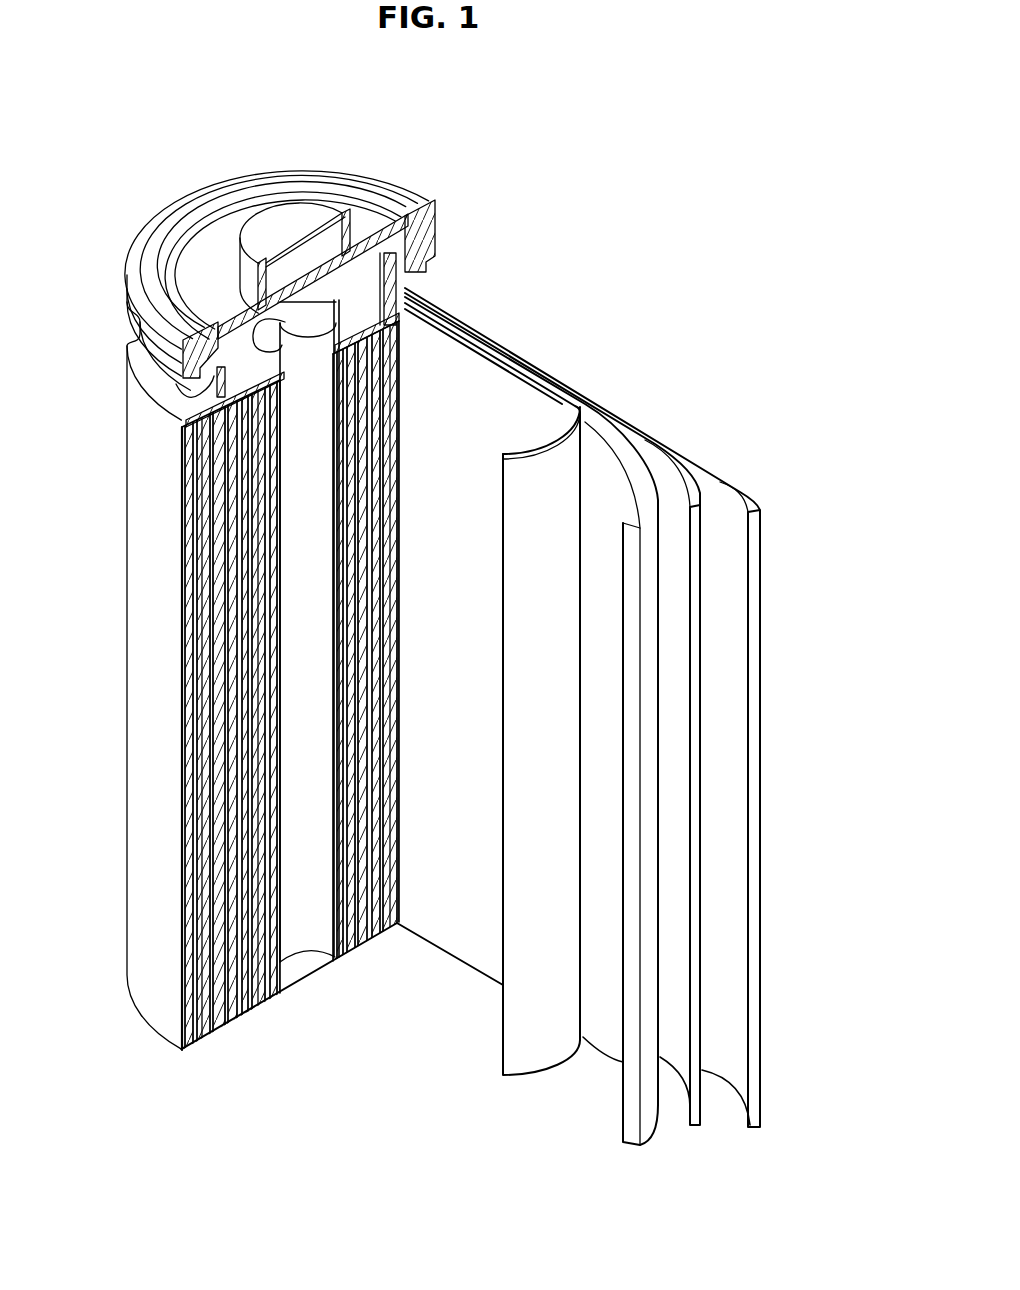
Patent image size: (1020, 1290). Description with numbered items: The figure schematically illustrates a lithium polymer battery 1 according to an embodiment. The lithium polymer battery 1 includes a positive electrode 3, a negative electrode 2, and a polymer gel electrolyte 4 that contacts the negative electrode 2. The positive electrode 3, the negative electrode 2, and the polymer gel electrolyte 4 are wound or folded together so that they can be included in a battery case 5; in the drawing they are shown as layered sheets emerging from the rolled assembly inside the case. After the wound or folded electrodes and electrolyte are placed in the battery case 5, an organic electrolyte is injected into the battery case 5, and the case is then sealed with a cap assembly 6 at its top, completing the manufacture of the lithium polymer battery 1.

The lithium polymer battery 1 is at (606, 195).
The negative electrode 2 is at (733, 467).
The positive electrode 3 is at (645, 467).
The polymer gel electrolyte 4 is at (545, 457).
The battery case 5 is at (137, 663).
The cap assembly 6 is at (272, 223).